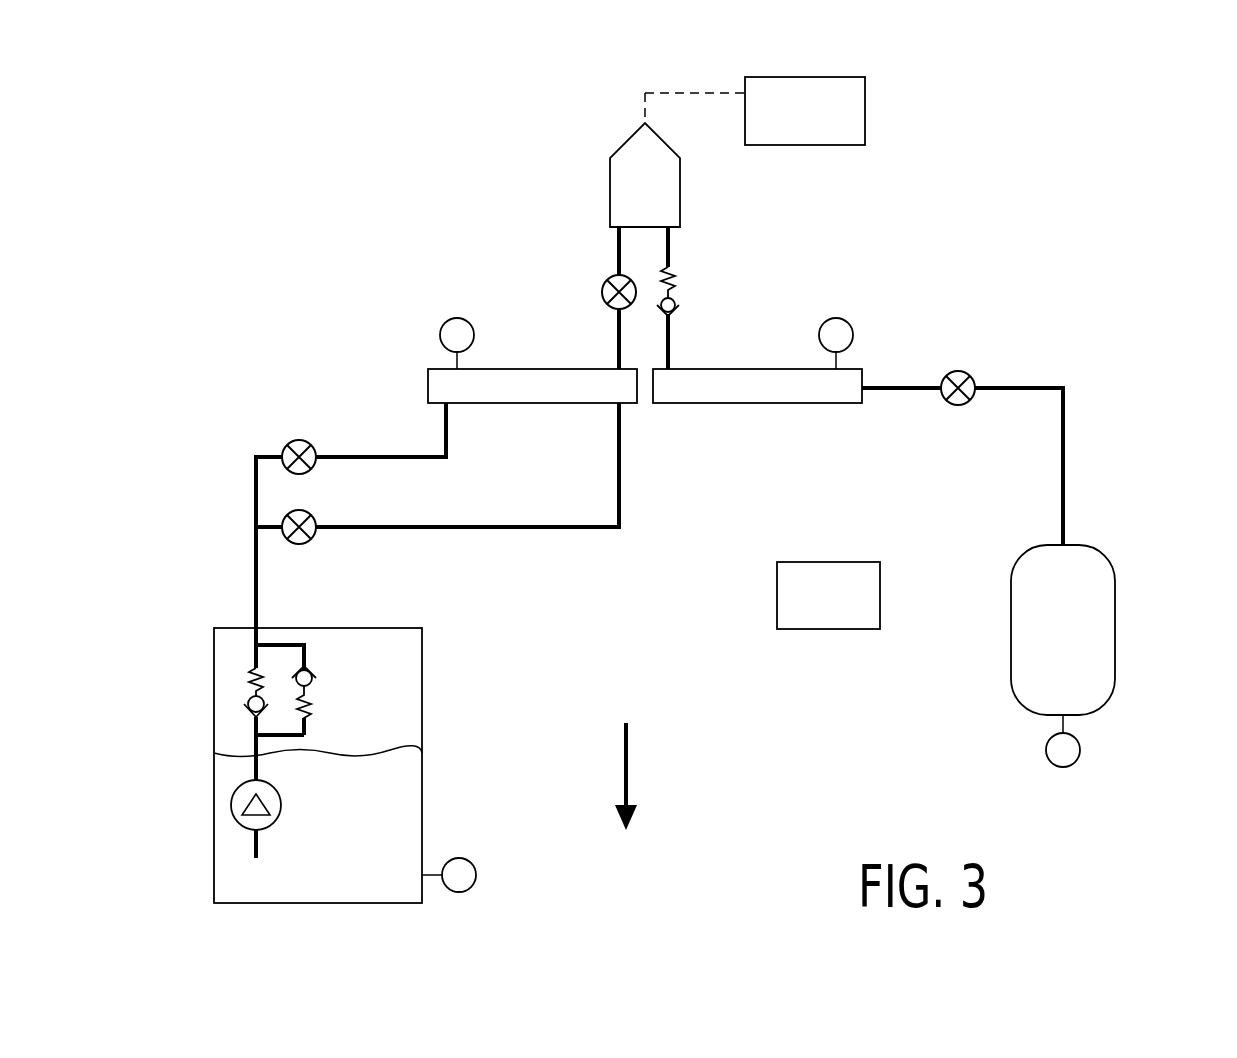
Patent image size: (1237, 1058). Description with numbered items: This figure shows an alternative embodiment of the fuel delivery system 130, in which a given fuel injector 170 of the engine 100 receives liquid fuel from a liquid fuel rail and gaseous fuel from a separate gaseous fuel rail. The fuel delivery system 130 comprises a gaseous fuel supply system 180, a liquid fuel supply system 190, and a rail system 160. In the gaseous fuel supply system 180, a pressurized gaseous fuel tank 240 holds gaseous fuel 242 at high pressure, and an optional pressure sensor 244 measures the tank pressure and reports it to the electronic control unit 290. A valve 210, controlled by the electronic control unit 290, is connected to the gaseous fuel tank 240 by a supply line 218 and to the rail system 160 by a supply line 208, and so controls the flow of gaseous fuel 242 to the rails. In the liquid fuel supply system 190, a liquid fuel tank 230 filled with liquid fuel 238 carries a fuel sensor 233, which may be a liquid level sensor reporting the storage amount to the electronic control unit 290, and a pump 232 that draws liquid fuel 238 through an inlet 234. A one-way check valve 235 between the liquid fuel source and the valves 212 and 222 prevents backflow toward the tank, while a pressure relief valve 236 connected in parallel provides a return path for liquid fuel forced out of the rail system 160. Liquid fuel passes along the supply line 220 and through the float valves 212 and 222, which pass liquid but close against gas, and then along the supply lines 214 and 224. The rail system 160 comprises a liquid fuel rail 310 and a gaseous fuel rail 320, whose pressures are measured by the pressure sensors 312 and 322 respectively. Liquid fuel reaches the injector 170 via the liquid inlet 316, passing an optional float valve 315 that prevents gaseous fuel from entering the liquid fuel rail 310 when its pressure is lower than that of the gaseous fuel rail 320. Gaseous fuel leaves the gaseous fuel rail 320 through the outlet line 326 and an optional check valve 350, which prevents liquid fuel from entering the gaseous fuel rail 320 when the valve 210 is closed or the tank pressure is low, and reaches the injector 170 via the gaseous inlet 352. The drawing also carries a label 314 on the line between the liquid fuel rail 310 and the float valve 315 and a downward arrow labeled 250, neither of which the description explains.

The engine 100 is at (833, 145).
The fuel delivery system 130 is at (1093, 309).
The rail system 160 is at (474, 240).
The fuel injector 170 is at (680, 197).
The gaseous fuel supply system 180 is at (1152, 482).
The liquid fuel supply system 190 is at (152, 509).
The supply line 208 is at (890, 386).
The valve 210 is at (969, 376).
The valve 212 is at (311, 445).
The supply line 214 is at (446, 437).
The supply line 218 is at (1063, 446).
The supply line 220 is at (256, 493).
The valve 222 is at (311, 513).
The supply line 224 is at (619, 453).
The liquid fuel tank 230 is at (422, 698).
The pump 232 is at (236, 799).
The fuel sensor 233 is at (472, 887).
The inlet 234 is at (254, 845).
The check valve 235 is at (248, 688).
The pressure relief valve 236 is at (308, 670).
The liquid fuel 238 is at (318, 886).
The gaseous fuel tank 240 is at (1097, 552).
The gaseous fuel 242 is at (1098, 612).
The pressure sensor 244 is at (1076, 762).
The gravity direction arrow 250 is at (628, 762).
The electronic control unit 290 is at (810, 562).
The liquid fuel rail 310 is at (494, 369).
The pressure sensor 312 is at (462, 318).
The first rail outlet line 314 is at (619, 330).
The float valve 315 is at (604, 284).
The liquid inlet 316 is at (619, 250).
The gaseous fuel rail 320 is at (818, 403).
The pressure sensor 322 is at (841, 318).
The outlet line 326 is at (668, 346).
The check valve 350 is at (675, 300).
The gaseous inlet 352 is at (668, 254).